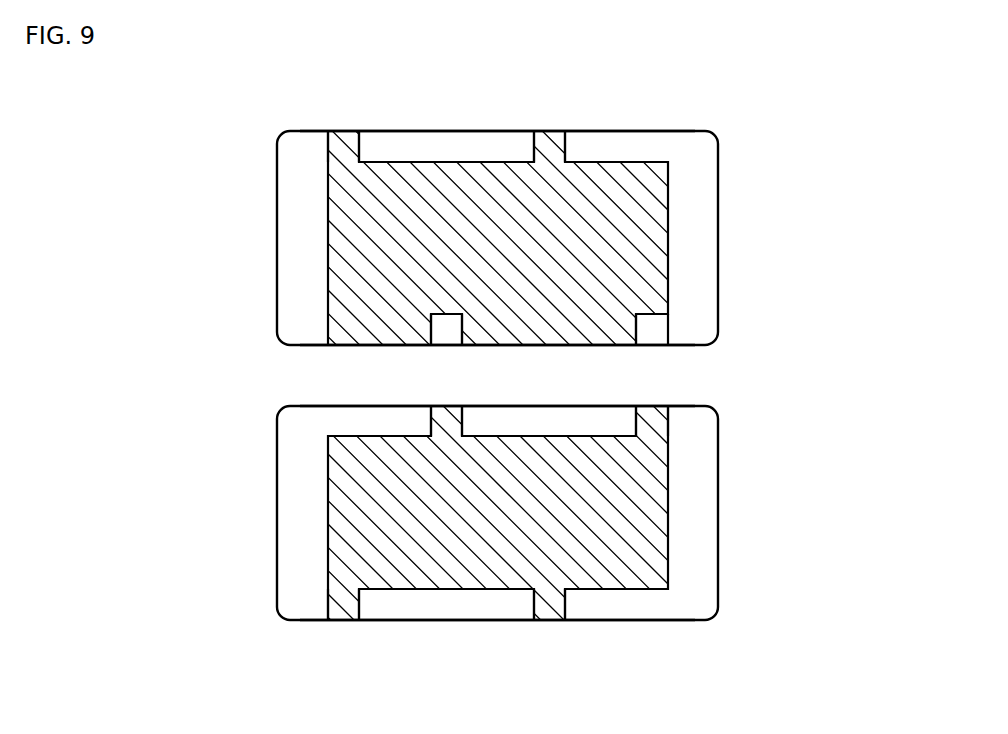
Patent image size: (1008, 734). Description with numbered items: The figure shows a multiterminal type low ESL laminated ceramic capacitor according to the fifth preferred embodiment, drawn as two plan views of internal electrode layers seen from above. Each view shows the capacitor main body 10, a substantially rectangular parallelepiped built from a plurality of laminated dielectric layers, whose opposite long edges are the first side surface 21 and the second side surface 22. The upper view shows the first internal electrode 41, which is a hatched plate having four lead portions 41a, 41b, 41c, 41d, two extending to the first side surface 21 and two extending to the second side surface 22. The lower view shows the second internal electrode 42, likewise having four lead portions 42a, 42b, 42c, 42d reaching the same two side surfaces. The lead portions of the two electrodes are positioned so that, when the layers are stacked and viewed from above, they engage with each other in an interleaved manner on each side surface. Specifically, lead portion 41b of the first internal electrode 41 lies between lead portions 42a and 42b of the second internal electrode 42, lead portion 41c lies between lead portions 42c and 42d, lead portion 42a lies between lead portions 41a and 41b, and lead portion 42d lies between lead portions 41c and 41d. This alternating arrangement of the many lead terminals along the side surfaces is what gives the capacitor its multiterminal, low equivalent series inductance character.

The capacitor main body 10 is at (731, 213).
The first side surface 21 is at (490, 130).
The second side surface 22 is at (302, 347).
The first internal electrode 41 is at (456, 160).
The lead portion 41a is at (370, 143).
The lead portion 41b is at (572, 131).
The lead portion 41c is at (465, 327).
The lead portion 41d is at (668, 322).
The second internal electrode 42 is at (397, 590).
The lead portion 42a is at (430, 424).
The lead portion 42b is at (633, 414).
The lead portion 42c is at (366, 609).
The lead portion 42d is at (565, 603).